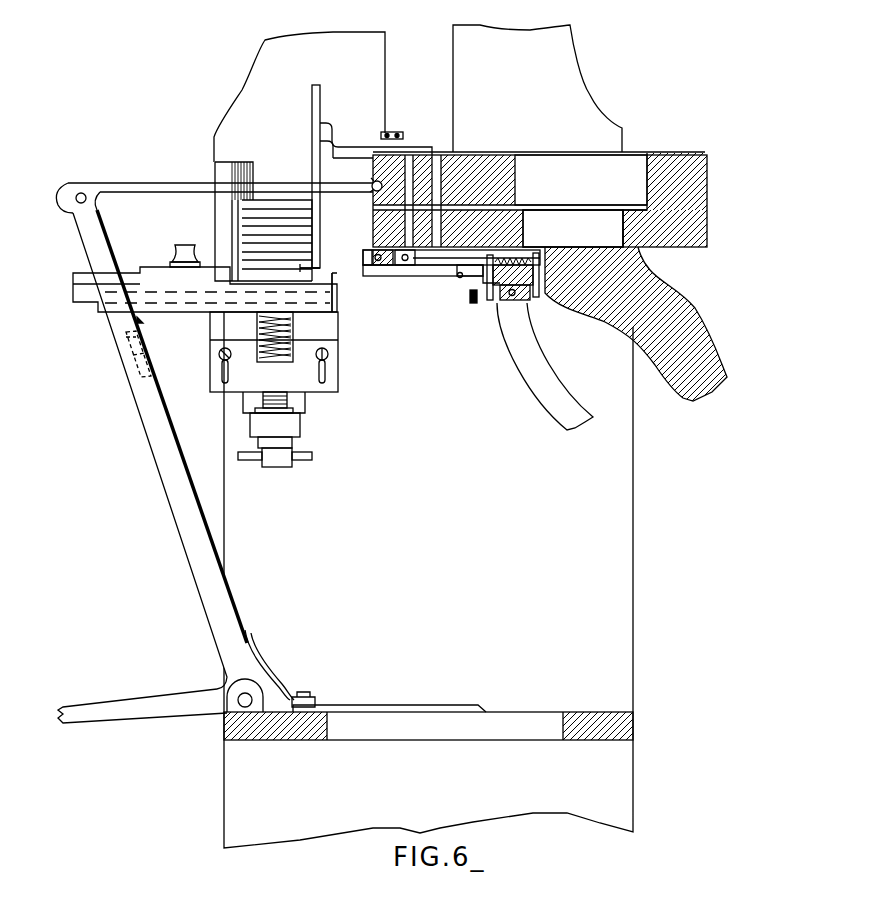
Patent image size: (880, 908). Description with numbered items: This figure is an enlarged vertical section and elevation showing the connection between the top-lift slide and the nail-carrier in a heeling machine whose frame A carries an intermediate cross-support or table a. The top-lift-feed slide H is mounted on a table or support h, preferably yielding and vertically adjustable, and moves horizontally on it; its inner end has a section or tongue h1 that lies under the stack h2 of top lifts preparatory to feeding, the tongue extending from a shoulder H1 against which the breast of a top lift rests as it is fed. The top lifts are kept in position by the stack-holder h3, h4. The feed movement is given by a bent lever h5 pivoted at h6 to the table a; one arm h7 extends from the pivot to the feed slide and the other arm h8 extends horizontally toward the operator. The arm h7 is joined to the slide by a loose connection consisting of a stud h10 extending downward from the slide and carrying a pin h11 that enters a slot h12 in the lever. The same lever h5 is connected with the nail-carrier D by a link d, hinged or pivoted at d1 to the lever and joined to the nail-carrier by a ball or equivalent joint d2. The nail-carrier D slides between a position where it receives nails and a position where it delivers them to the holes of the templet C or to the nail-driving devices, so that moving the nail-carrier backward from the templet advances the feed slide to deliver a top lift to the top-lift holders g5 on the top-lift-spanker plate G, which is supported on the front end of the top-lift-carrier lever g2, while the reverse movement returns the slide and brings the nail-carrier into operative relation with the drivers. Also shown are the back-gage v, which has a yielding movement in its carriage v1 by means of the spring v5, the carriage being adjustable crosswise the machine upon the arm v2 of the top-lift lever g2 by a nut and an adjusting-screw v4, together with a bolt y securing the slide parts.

The frame A is at (472, 436).
The intermediate cross-support or table a is at (307, 730).
The nail-carrier D is at (478, 160).
The templet C is at (373, 242).
The link d is at (124, 189).
The hinge or pivot d1 is at (76, 197).
The ball joint d2 is at (381, 181).
The table or support h is at (202, 304).
The section or tongue h1 is at (336, 286).
The stack of top lifts h2 is at (305, 266).
The stack-holder h3 is at (226, 178).
The stack-holder h4 is at (318, 111).
The bent lever h5 is at (158, 443).
The pivot h6 is at (243, 700).
The arm of bent lever h7 is at (203, 568).
The arm of bent lever h8 is at (98, 714).
The stud h10 is at (141, 318).
The pin h11 is at (124, 334).
The slot h12 is at (130, 357).
The top-lift-feed slide H is at (73, 283).
The shoulder H1 is at (230, 276).
The top-lift-spanker plate G is at (426, 264).
The top-lift-carrier lever g2 is at (527, 378).
The top-lift holders g5 is at (390, 271).
The bolt y is at (382, 263).
The back-gage v is at (463, 263).
The carriage v1 is at (538, 288).
The arm of top-lift lever v2 is at (497, 304).
The adjusting-screw v4 is at (530, 303).
The spring v5 is at (474, 302).